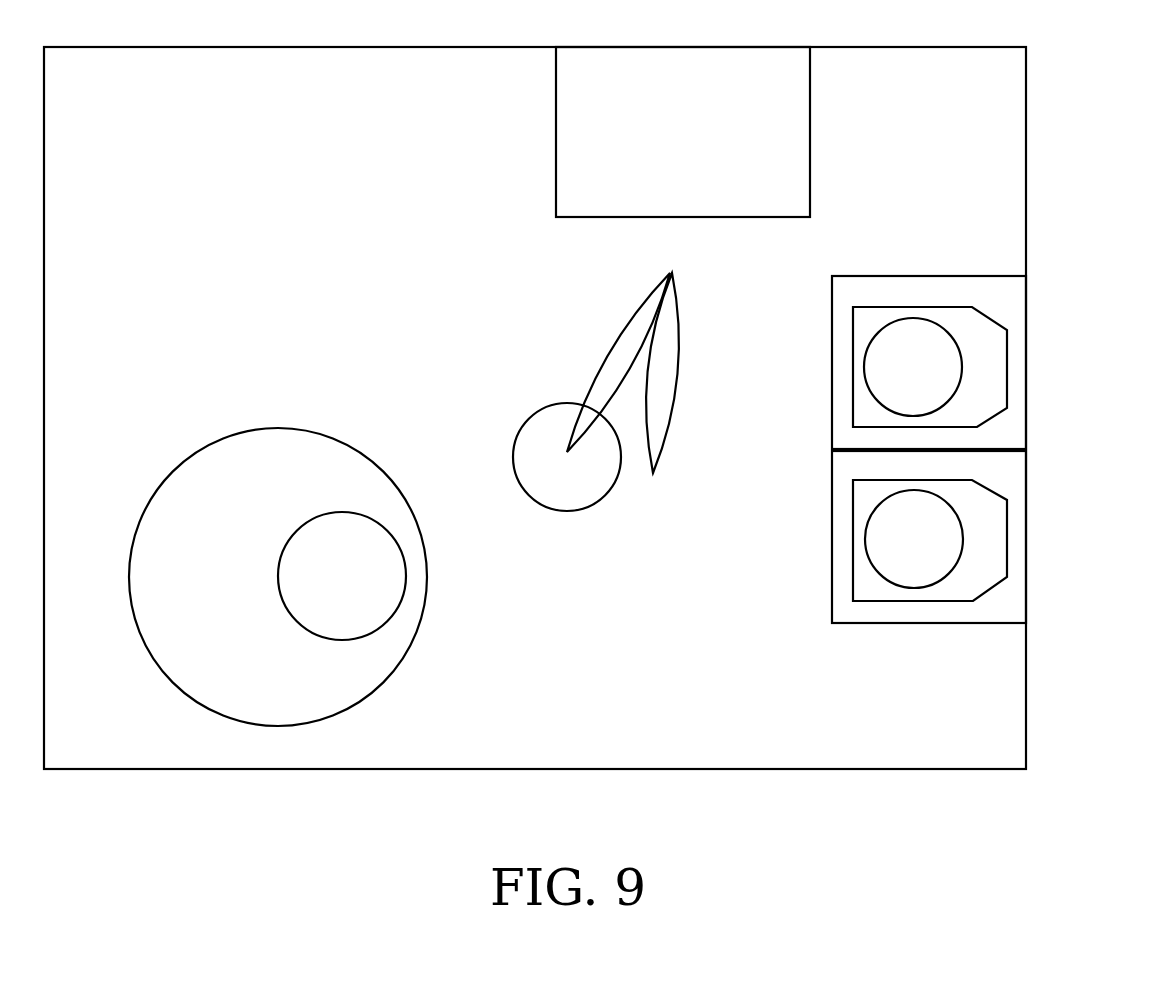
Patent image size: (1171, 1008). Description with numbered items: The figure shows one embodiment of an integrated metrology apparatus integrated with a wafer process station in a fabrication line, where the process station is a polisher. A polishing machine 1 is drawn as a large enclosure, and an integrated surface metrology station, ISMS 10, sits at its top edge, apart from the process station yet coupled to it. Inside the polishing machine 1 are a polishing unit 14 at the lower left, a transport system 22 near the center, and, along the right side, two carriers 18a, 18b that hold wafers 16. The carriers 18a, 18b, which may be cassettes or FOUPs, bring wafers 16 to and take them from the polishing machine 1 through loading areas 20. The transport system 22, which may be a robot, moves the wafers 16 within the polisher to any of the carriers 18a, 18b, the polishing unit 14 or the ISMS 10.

The polishing machine 1 is at (995, 155).
The integrated surface metrology station (ISMS) 10 is at (573, 147).
The polishing unit 14 is at (388, 680).
The wafers 16 is at (950, 506).
The carrier 18a is at (979, 337).
The carrier 18b is at (978, 577).
The loading areas 20 is at (1008, 433).
The transport system 22 is at (635, 450).